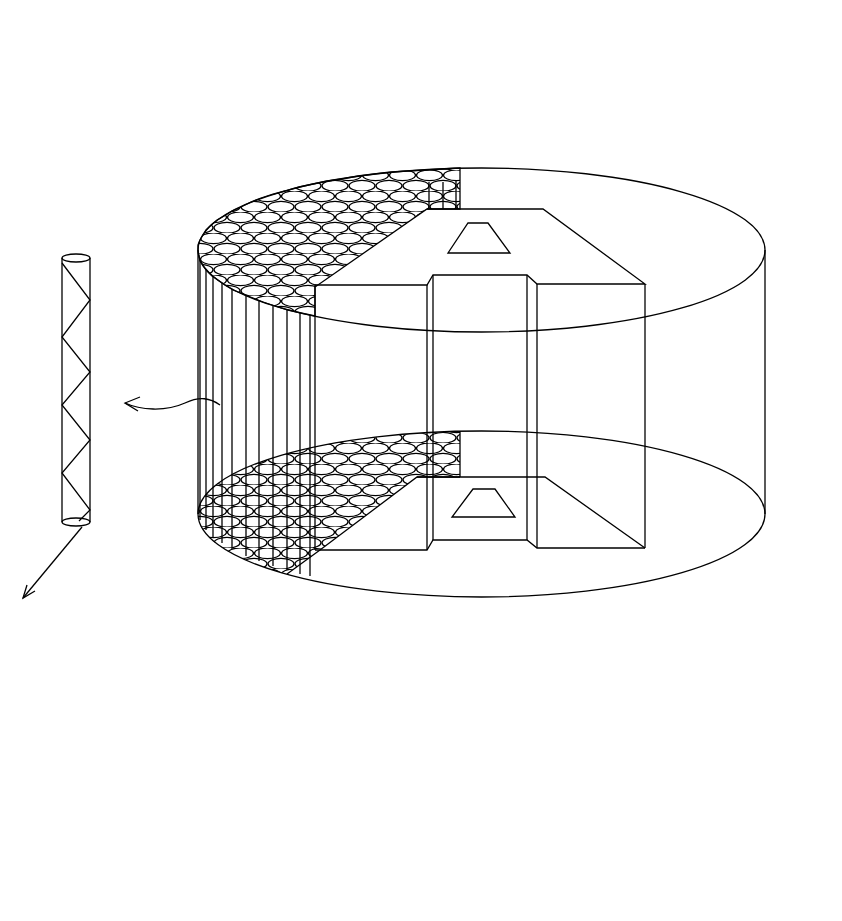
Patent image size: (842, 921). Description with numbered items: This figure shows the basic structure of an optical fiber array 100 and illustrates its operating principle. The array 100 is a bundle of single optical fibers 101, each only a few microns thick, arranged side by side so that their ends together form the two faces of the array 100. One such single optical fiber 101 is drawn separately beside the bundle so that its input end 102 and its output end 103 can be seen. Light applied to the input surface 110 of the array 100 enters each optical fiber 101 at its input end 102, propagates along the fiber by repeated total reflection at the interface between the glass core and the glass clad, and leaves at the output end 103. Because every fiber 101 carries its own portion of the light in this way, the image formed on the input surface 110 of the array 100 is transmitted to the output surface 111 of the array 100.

The optical fiber array 100 is at (377, 31).
The single optical fiber 101 is at (245, 216).
The input end 102 is at (132, 177).
The output end 103 is at (56, 565).
The input surface 110 is at (497, 187).
The output surface 111 is at (392, 596).